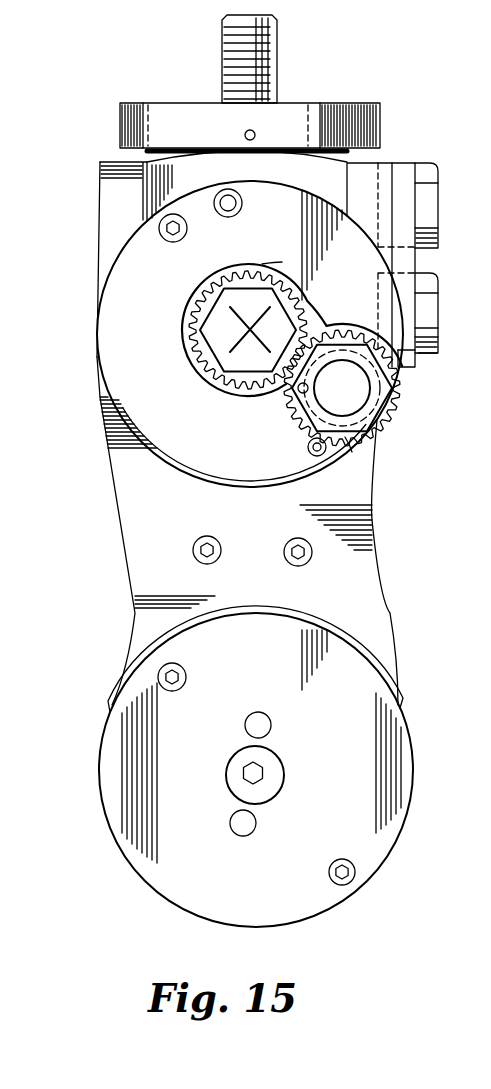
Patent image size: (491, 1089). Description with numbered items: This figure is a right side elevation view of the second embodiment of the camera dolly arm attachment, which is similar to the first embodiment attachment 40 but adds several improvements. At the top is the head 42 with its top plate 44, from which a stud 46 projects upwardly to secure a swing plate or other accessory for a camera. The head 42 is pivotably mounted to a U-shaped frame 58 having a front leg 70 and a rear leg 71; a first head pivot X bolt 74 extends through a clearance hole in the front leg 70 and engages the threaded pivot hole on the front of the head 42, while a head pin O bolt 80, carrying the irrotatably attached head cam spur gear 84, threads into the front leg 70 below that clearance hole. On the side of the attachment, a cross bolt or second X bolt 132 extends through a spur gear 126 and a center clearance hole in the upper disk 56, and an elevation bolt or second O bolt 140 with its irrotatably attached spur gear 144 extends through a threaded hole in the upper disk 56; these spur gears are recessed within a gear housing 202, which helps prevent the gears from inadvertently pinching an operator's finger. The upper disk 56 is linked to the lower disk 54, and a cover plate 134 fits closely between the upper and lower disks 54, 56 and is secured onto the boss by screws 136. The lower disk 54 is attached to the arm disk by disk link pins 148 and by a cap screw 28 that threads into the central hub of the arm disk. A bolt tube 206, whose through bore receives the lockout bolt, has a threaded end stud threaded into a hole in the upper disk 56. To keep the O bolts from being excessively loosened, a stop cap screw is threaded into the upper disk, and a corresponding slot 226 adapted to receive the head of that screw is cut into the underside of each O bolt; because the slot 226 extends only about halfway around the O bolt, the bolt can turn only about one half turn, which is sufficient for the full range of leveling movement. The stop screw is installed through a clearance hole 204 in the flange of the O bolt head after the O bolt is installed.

The cap screw 28 is at (262, 777).
The attachment 40 is at (402, 528).
The head 42 is at (308, 168).
The top plate 44 is at (272, 123).
The stud 46 is at (280, 40).
The lower disk 54 is at (320, 903).
The upper disk 56 is at (123, 357).
The U-shaped frame 58 is at (104, 194).
The front leg 70 is at (385, 172).
The rear leg 71 is at (100, 164).
The first head pivot X bolt 74 is at (438, 171).
The head pin O bolt 80 is at (430, 356).
The head cam spur gear 84 is at (408, 372).
The spur gear 126 is at (270, 262).
The cross bolt or second X bolt 132 is at (220, 318).
The cover plate 134 is at (360, 598).
The screws 136 is at (298, 560).
The elevation bolt or second O bolt 140 is at (343, 377).
The spur gear 144 is at (297, 422).
The disk link pins 148 is at (158, 235).
The gear housing 202 is at (180, 312).
The clearance hole 204 is at (298, 390).
The bolt tube 206 is at (228, 188).
The slot 226 is at (350, 433).